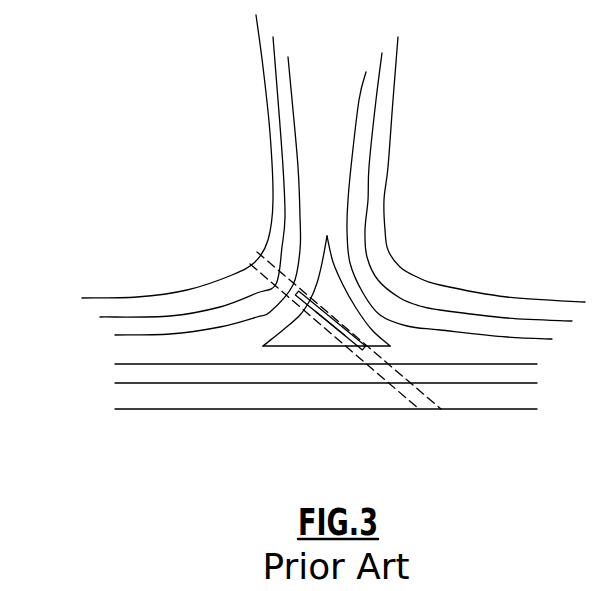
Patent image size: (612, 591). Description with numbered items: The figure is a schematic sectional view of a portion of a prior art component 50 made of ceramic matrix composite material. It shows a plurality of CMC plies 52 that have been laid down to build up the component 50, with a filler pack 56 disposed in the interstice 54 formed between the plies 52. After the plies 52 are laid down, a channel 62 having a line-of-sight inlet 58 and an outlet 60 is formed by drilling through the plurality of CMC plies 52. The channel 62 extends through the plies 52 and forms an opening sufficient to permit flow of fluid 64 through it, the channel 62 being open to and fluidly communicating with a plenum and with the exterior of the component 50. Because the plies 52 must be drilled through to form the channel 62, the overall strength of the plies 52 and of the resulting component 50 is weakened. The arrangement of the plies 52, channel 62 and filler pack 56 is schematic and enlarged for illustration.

The prior art component 50 is at (83, 107).
The CMC plies 52 is at (378, 90).
The interstice 54 is at (340, 226).
The filler pack 56 is at (257, 322).
The line-of-sight inlet 58 is at (246, 245).
The outlet 60 is at (446, 430).
The channel 62 is at (378, 344).
The fluid 64 is at (333, 328).